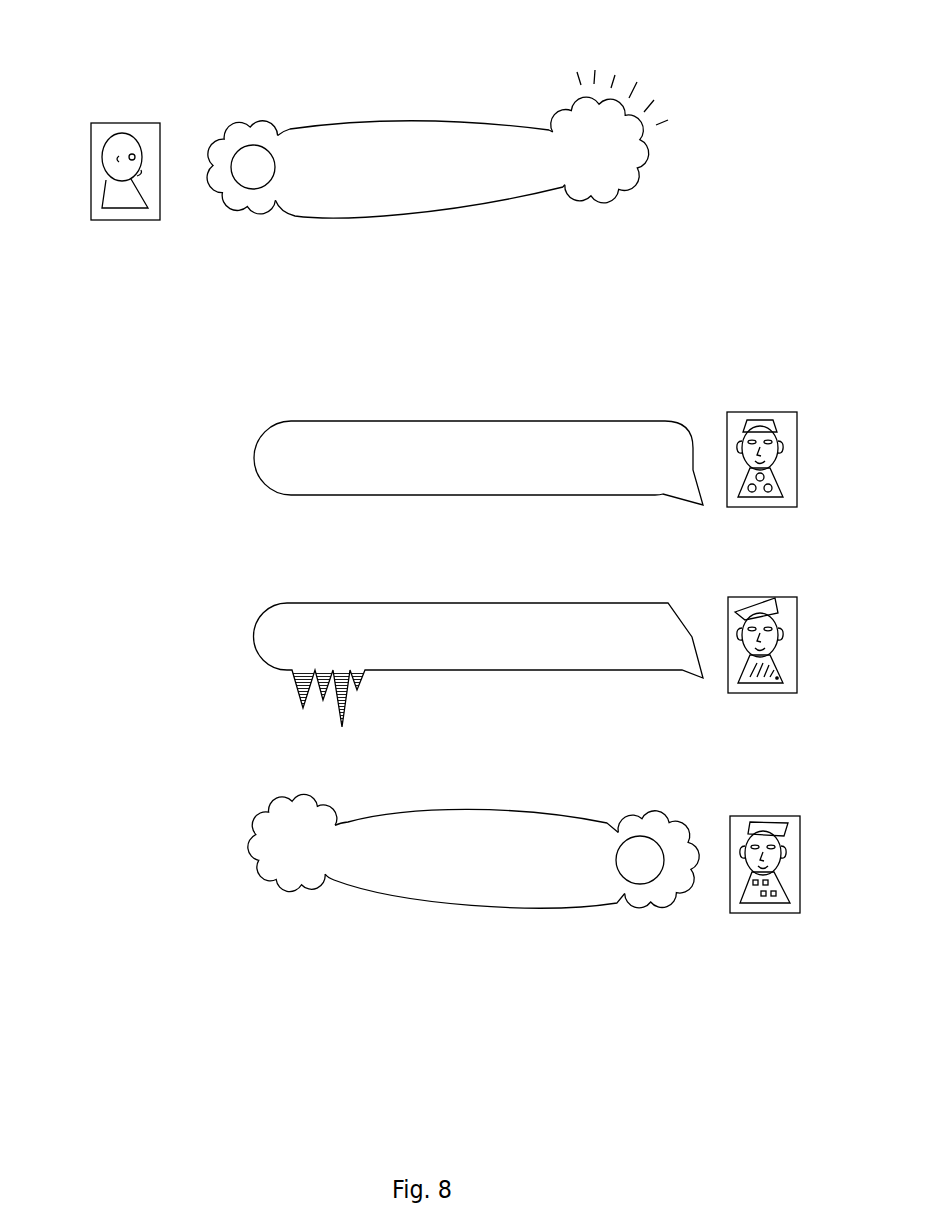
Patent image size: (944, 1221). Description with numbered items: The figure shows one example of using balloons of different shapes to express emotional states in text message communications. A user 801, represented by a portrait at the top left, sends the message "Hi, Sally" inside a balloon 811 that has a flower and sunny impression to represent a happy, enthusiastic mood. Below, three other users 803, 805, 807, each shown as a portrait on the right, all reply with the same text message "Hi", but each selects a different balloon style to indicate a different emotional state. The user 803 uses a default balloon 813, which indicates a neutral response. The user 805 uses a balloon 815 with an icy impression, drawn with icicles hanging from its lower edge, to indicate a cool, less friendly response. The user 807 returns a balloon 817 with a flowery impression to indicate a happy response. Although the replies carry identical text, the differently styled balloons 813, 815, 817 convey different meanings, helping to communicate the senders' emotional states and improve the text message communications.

The user 801 is at (93, 137).
The user 803 is at (797, 430).
The user 805 is at (797, 620).
The user 807 is at (799, 840).
The balloon 811 is at (402, 117).
The default balloon 813 is at (549, 418).
The balloon style 815 is at (570, 602).
The balloon 817 is at (528, 810).